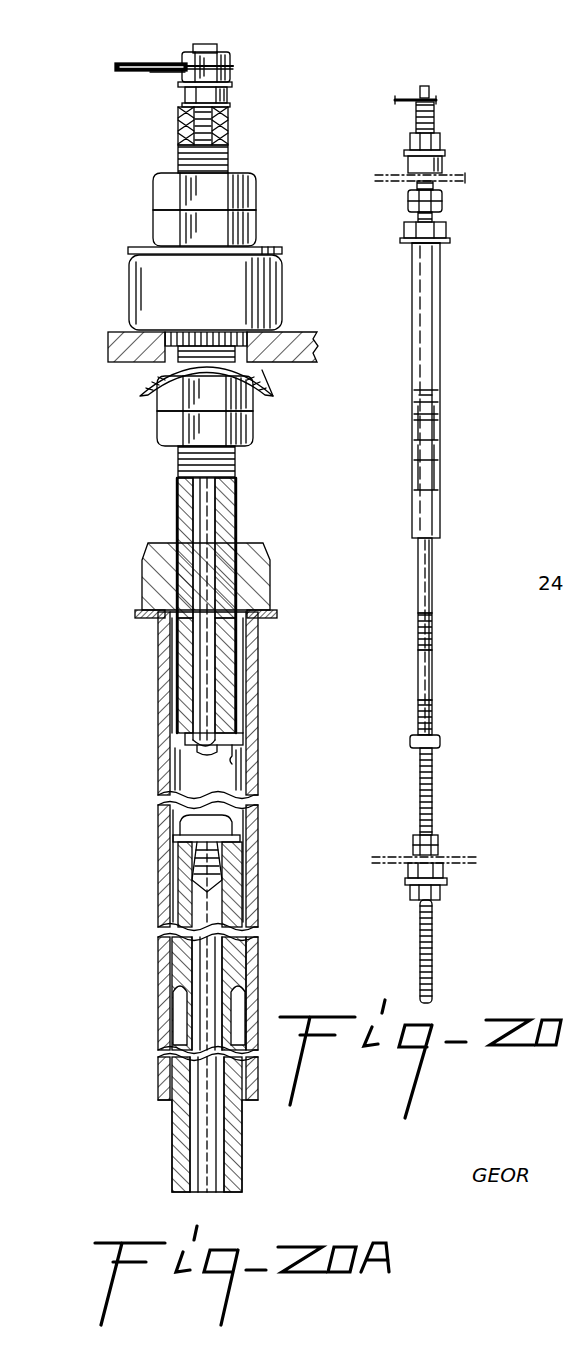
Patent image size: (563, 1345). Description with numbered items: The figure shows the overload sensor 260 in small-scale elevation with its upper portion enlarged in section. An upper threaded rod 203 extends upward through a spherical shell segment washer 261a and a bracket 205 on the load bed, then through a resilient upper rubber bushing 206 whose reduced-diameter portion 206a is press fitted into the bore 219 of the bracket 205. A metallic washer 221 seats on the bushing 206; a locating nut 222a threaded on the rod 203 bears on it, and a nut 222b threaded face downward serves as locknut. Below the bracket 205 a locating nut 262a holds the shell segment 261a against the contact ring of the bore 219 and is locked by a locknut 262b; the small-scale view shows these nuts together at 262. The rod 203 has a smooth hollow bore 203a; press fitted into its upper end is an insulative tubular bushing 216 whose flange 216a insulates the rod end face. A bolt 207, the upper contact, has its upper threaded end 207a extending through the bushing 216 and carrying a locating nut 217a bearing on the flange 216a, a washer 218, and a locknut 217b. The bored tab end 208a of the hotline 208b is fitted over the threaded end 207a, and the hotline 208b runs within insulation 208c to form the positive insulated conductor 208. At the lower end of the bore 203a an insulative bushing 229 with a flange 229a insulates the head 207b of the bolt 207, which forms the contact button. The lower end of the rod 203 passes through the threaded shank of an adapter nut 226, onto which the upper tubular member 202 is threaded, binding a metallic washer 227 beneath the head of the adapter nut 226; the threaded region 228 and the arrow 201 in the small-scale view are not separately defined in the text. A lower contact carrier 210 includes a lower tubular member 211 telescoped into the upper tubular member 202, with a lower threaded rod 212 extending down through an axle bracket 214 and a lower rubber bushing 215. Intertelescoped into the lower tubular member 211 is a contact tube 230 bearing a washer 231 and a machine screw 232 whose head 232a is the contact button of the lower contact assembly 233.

In FIG. 20, the push-pull control assembly 201 is at (450, 378).
In FIG. 20A, the upper tubular member 202 is at (158, 783).
In FIG. 20, the upper tubular member 202 is at (412, 318).
In FIG. 20A, the upper threaded rod 203 is at (178, 157).
In FIG. 20, the upper threaded rod 203 is at (418, 127).
In FIG. 20A, the smooth hollow bore 203a is at (172, 666).
In FIG. 20A, the bracket 205 is at (108, 352).
In FIG. 20, the bracket 205 is at (466, 178).
In FIG. 20A, the upper rubber bushing 206 is at (129, 310).
In FIG. 20, the upper rubber bushing 206 is at (446, 160).
In FIG. 20A, the reduced-diameter portion 206a is at (187, 340).
In FIG. 20A, the contact bolt 207 is at (207, 673).
In FIG. 20, the contact bolt 207 is at (434, 122).
In FIG. 20A, the upper threaded end 207a is at (205, 46).
In FIG. 20A, the head of contact bolt 207b is at (226, 769).
In FIG. 20A, the positive insulated conductor 208 is at (108, 67).
In FIG. 20, the positive insulated conductor 208 is at (408, 90).
In FIG. 20A, the bored tab end 208a is at (233, 56).
In FIG. 20A, the hotline 208b is at (165, 62).
In FIG. 20A, the insulation 208c is at (166, 72).
In FIG. 20, the lower contact carrier 210 is at (450, 686).
In FIG. 20A, the lower tubular member 211 is at (172, 1131).
In FIG. 20, the lower tubular member 211 is at (418, 690).
In FIG. 20, the lower threaded rod 212 is at (420, 802).
In FIG. 20, the bracket 214 is at (482, 860).
In FIG. 20, the lower rubber bushing 215 is at (445, 879).
In FIG. 20A, the insulative tubular bushing 216 is at (229, 133).
In FIG. 20A, the flange 216a is at (229, 113).
In FIG. 20A, the locating nut 217a is at (183, 97).
In FIG. 20A, the second nut 217b is at (234, 83).
In FIG. 20A, the washer 218 is at (229, 91).
In FIG. 20A, the bore 219 is at (165, 366).
In FIG. 20A, the metallic washer 221 is at (128, 250).
In FIG. 20A, the locating nut 222a is at (257, 216).
In FIG. 20A, the locknut 222b is at (257, 186).
In FIG. 20A, the adapter nut 226 is at (142, 572).
In FIG. 20, the adapter nut 226 is at (425, 232).
In FIG. 20A, the metallic washer 227 is at (135, 614).
In FIG. 20A, the internal threads 228 is at (176, 636).
In FIG. 20A, the insulative tubular bushing 229 is at (240, 723).
In FIG. 20A, the flange 229a is at (243, 746).
In FIG. 20A, the contact tube 230 is at (250, 906).
In FIG. 20A, the washer 231 is at (241, 839).
In FIG. 20A, the machine screw 232 is at (216, 869).
In FIG. 20A, the screw head 232a is at (235, 819).
In FIG. 20A, the lower contact assembly 233 is at (253, 1001).
In FIG. 20, the overload sensor 260 is at (452, 546).
In FIG. 20A, the spherical shell segment washer 261a is at (264, 373).
In FIG. 20, the clamp nut 262 is at (425, 201).
In FIG. 20A, the locating nut 262a is at (255, 405).
In FIG. 20A, the locknut 262b is at (255, 433).